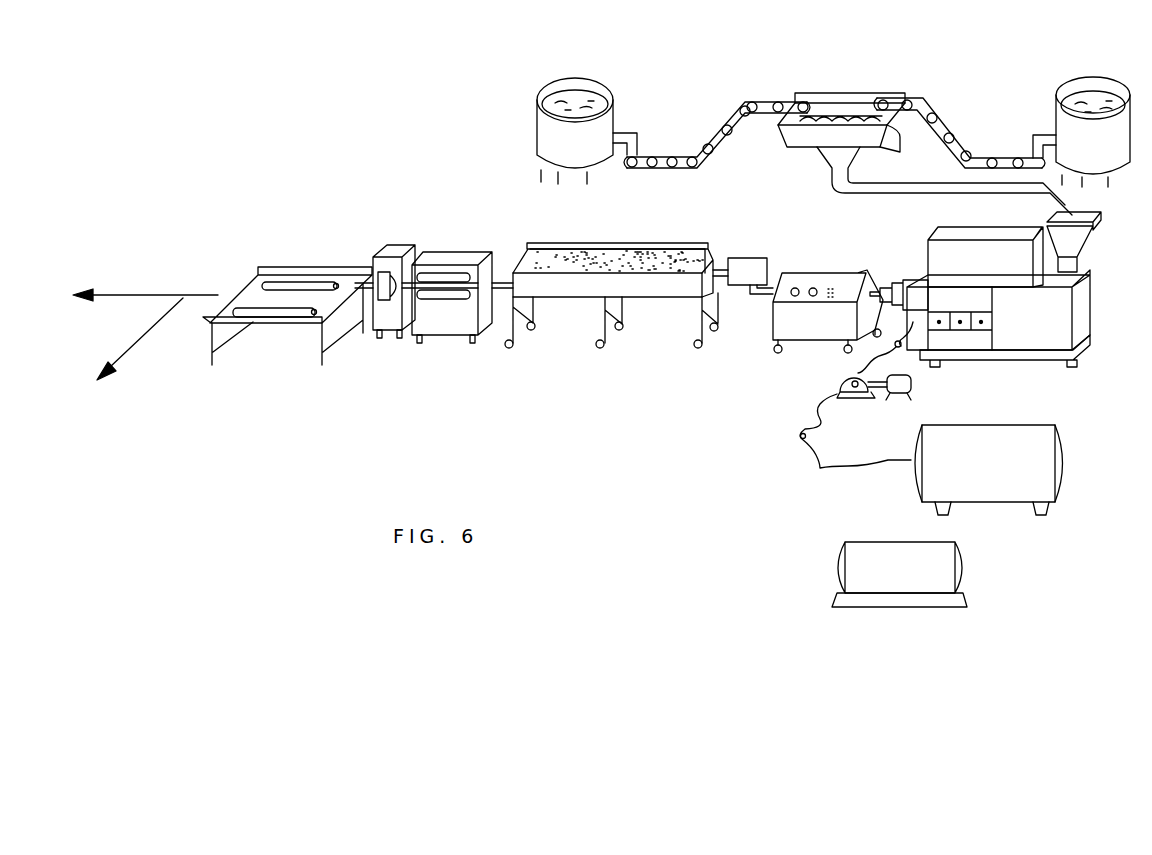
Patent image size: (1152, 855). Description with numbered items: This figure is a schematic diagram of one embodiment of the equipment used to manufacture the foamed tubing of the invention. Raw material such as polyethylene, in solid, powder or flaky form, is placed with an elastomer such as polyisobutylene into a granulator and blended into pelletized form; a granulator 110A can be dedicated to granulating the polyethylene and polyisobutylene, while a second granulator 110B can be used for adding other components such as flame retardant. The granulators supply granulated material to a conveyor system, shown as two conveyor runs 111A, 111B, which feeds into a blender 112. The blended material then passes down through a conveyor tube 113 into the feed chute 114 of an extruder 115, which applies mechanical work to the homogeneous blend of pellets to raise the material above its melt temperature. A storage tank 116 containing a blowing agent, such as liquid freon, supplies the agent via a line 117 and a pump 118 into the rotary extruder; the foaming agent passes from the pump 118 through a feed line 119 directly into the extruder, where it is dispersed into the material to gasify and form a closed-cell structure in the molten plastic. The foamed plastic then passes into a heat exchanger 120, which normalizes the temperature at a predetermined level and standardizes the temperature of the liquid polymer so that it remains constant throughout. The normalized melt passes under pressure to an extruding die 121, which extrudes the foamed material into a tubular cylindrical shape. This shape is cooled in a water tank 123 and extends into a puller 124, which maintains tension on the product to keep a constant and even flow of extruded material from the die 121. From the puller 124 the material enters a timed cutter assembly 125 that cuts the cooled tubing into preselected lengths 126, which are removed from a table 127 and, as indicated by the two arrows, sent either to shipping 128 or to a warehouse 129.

The granulator 110A is at (537, 125).
The second granulator 110B is at (1057, 112).
The conveyor system 111A is at (755, 100).
The conveyor system 111B is at (928, 100).
The blender 112 is at (892, 148).
The conveyor tube 113 is at (877, 196).
The feed chute 114 is at (1098, 220).
The extruder 115 is at (1082, 301).
The storage tank 116 is at (1043, 437).
The line 117 is at (800, 435).
The pump 118 is at (838, 375).
The feed line 119 is at (905, 355).
The heat exchanger 120 is at (823, 274).
The extruding die 121 is at (740, 262).
The water tank 123 is at (578, 281).
The puller 124 is at (452, 255).
The timed cutter assembly 125 is at (393, 248).
The lengths 126 is at (312, 278).
The table 127 is at (278, 267).
The shipping 128 is at (134, 346).
The warehouse 129 is at (107, 294).